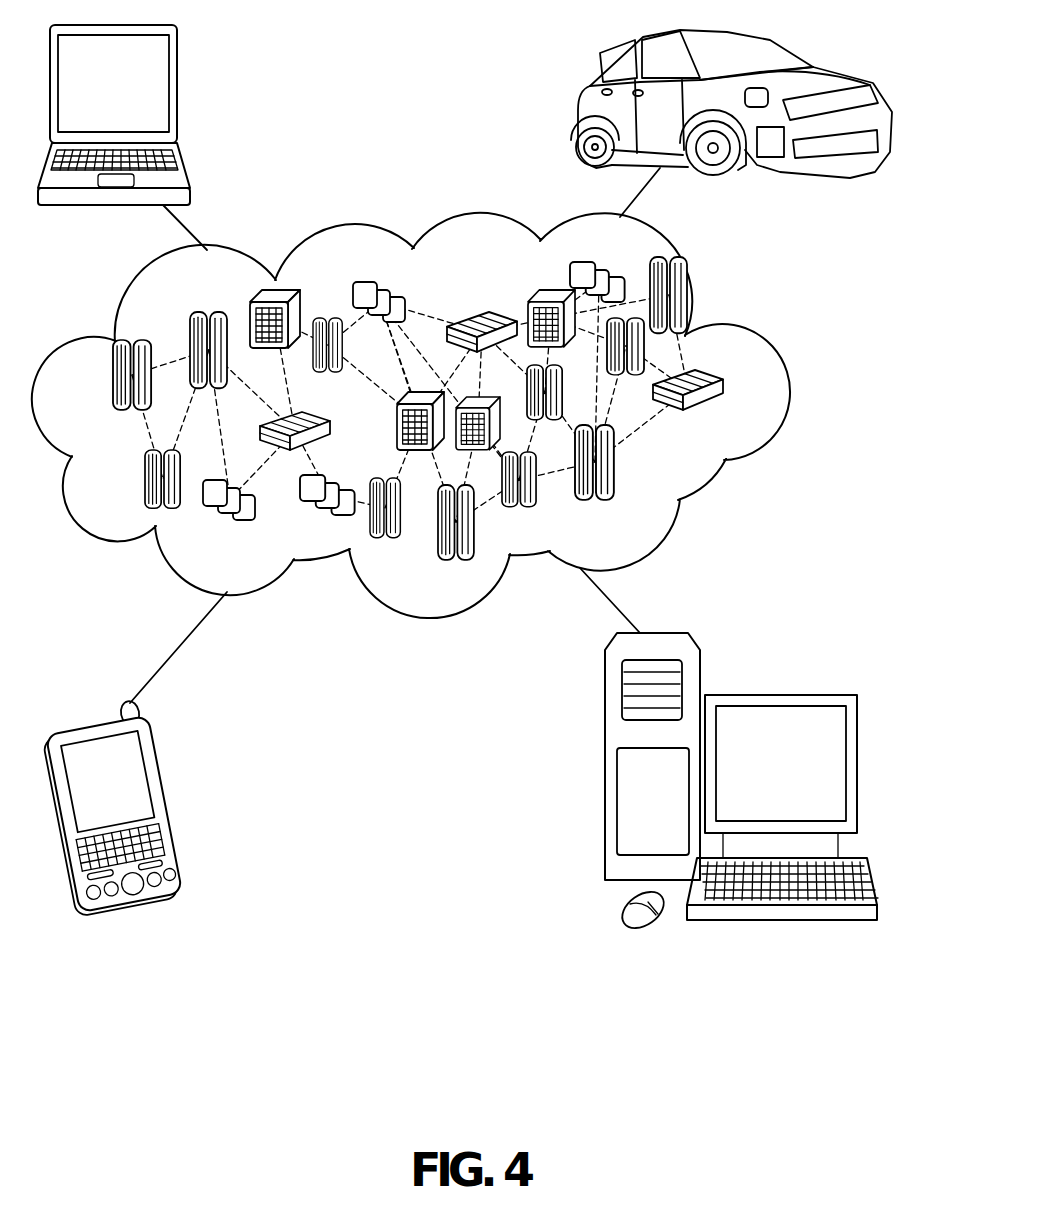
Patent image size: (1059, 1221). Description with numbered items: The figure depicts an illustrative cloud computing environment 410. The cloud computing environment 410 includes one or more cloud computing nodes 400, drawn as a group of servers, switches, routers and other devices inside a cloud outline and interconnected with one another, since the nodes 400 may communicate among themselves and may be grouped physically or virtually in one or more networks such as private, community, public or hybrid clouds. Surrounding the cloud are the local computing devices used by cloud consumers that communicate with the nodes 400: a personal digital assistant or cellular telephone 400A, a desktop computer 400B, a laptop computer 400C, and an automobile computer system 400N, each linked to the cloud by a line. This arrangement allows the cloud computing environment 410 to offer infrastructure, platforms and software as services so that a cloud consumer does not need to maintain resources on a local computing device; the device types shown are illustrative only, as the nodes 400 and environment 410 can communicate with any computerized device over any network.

The cloud computing nodes 400 is at (471, 408).
The cloud computing environment 410 is at (783, 386).
The personal digital assistant or cellular telephone 400A is at (168, 795).
The desktop computer 400B is at (779, 694).
The laptop computer 400C is at (180, 92).
The automobile computer system 400N is at (577, 107).